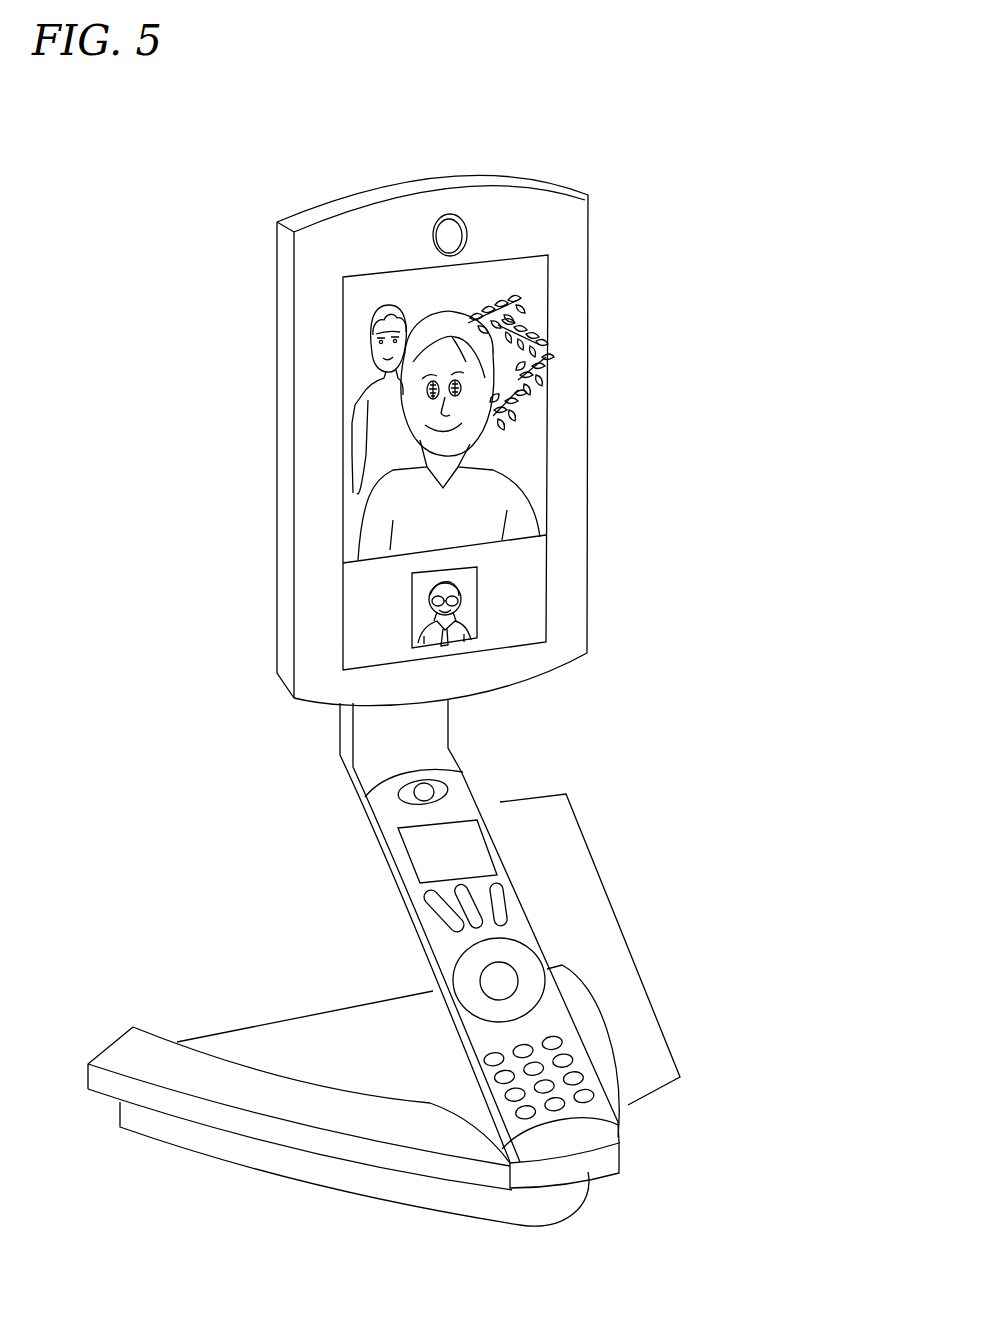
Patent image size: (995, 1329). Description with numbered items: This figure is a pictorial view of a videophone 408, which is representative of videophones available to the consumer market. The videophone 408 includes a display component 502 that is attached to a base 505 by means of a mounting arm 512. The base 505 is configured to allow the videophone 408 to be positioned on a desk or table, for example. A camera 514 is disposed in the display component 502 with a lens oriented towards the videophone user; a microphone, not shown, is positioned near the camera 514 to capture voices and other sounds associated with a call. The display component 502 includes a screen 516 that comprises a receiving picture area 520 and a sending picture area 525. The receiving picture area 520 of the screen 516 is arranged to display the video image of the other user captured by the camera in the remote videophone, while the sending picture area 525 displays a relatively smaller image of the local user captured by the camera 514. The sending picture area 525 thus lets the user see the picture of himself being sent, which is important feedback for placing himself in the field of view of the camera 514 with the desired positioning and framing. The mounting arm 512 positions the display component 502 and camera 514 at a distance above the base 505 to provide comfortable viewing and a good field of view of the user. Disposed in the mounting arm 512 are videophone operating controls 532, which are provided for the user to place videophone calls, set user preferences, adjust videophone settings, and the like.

The videophone 408 is at (549, 111).
The display component 502 is at (277, 600).
The base 505 is at (232, 1162).
The mounting arm 512 is at (342, 770).
The camera 514 is at (433, 233).
The screen 516 is at (548, 282).
The receiving picture area 520 is at (517, 445).
The sending picture area 525 is at (465, 608).
The videophone operating controls 532 is at (625, 935).